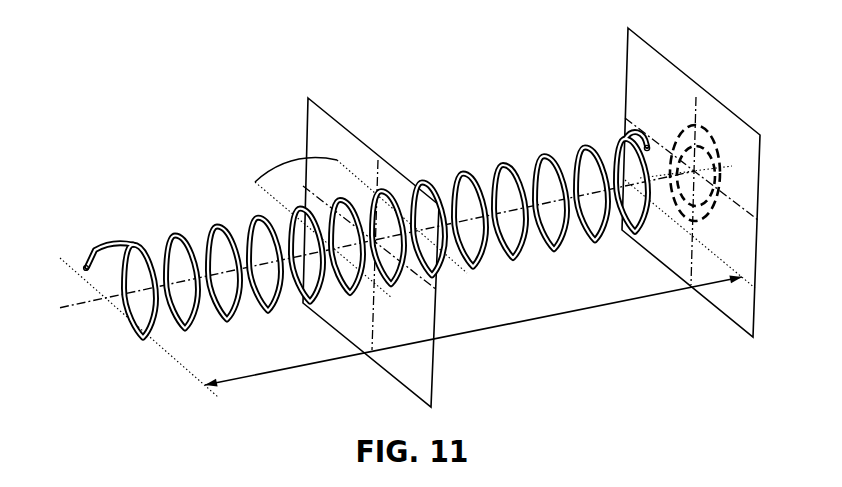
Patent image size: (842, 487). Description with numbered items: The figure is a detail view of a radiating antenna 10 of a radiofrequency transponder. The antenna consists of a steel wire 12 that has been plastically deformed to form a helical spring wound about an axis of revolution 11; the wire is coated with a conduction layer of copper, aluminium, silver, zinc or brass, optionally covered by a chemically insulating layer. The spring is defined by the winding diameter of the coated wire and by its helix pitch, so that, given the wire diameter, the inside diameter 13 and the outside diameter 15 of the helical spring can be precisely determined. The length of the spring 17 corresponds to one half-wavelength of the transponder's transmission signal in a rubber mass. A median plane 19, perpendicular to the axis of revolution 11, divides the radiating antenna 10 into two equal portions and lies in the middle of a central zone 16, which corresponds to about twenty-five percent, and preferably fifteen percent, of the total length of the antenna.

The radiating antenna 10 is at (367, 198).
The axis of revolution 11 is at (87, 320).
The steel wire 12 is at (233, 218).
The inside diameter 13 is at (672, 132).
The outside diameter 15 is at (667, 180).
The central zone 16 is at (283, 158).
The length of the spring 17 is at (620, 314).
The median plane 19 is at (448, 386).